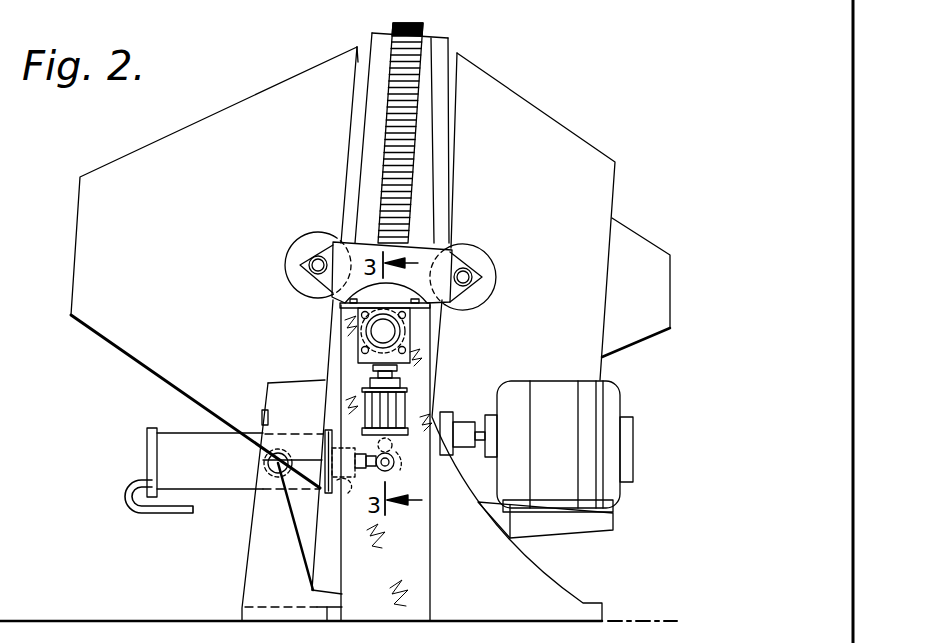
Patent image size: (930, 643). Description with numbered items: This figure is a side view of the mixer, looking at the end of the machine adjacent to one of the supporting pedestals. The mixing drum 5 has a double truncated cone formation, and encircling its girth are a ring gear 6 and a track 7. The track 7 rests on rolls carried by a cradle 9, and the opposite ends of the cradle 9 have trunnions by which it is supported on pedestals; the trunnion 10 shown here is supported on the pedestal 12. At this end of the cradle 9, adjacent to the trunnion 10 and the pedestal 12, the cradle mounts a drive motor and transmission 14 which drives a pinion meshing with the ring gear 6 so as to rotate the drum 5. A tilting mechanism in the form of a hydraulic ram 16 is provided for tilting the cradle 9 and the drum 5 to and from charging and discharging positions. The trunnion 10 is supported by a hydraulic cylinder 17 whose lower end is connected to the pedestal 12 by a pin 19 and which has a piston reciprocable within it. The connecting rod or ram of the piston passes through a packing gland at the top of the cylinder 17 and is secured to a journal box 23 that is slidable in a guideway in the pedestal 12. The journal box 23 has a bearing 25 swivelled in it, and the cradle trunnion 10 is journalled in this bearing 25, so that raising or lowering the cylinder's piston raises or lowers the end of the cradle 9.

The mixing drum 5 is at (550, 117).
The ring gear 6 is at (401, 22).
The track 7 is at (382, 32).
The cradle 9 is at (330, 352).
The trunnion 10 is at (385, 333).
The pedestal 12 is at (347, 388).
The drive motor and transmission 14 is at (552, 388).
The hydraulic ram 16 is at (188, 445).
The hydraulic cylinder 17 is at (387, 405).
The pin 19 is at (392, 450).
The journal box 23 is at (405, 347).
The bearing 25 is at (365, 328).